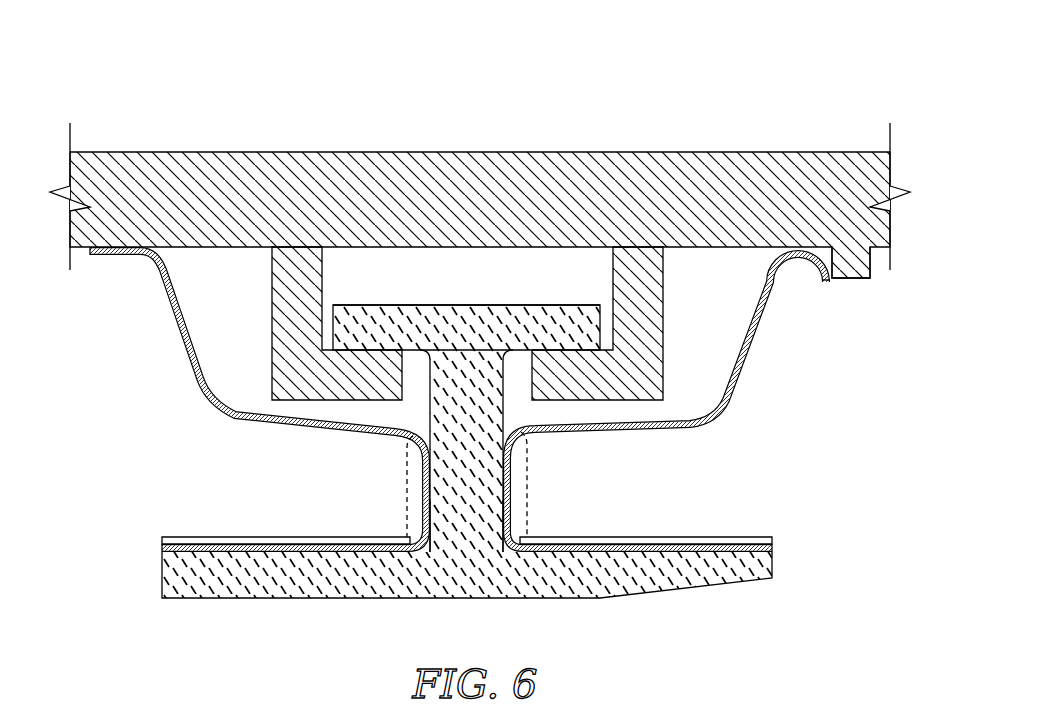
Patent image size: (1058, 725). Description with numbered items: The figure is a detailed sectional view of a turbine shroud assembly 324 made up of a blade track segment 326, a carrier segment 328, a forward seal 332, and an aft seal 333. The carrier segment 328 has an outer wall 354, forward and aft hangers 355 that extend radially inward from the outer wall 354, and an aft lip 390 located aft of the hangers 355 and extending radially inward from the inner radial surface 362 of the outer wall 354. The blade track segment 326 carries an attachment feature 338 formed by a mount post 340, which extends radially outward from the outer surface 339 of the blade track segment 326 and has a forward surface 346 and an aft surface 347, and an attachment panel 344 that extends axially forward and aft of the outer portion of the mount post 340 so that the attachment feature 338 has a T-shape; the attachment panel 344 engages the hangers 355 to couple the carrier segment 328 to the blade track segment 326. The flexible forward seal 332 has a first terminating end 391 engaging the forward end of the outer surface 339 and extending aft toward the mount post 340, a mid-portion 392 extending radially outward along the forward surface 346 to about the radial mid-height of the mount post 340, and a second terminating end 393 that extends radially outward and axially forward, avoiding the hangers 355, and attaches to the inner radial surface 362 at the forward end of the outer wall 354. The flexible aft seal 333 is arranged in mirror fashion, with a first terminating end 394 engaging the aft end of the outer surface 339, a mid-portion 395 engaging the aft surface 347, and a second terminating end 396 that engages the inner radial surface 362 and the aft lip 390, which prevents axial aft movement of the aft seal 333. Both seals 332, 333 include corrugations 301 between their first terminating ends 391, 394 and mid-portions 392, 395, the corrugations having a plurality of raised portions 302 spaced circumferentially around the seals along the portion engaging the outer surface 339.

The corrugations 301 is at (160, 542).
The raised portions 302 is at (282, 537).
The turbine shroud assembly 324 is at (797, 52).
The blade track segment 326 is at (750, 592).
The carrier segment 328 is at (820, 87).
The forward seal 332 is at (200, 383).
The aft seal 333 is at (737, 380).
The attachment feature 338 is at (504, 302).
The outer surface 339 is at (255, 547).
The mount post 340 is at (450, 517).
The attachment panel 344 is at (478, 320).
The forward surface 346 is at (423, 505).
The aft surface 347 is at (502, 497).
The outer wall 354 is at (362, 175).
The forward and aft hangers 355 is at (298, 277).
The inner radial surface 362 is at (187, 246).
The aft lip 390 is at (846, 270).
The first terminating end 391 is at (200, 535).
The mid-portion 392 is at (420, 485).
The second terminating end 393 is at (160, 318).
The first terminating end 394 is at (732, 530).
The mid-portion 395 is at (515, 477).
The second terminating end 396 is at (762, 326).